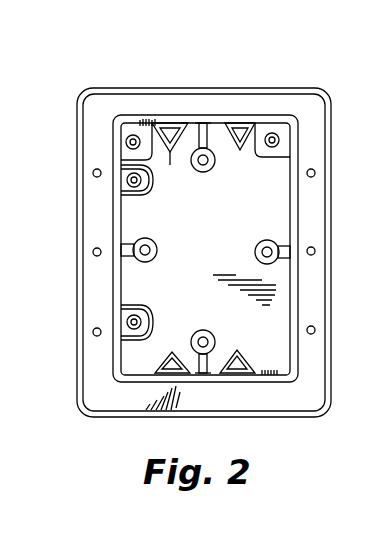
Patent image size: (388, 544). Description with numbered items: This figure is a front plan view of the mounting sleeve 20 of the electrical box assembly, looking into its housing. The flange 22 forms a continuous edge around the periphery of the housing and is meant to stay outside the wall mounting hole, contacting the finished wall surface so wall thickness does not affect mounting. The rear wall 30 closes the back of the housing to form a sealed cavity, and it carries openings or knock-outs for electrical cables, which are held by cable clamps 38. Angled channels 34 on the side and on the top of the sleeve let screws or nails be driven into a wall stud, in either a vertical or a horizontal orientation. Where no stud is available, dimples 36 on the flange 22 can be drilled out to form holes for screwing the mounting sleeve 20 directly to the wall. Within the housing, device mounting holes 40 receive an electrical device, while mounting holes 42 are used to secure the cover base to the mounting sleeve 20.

The mounting sleeve 20 is at (70, 108).
The flange 22 is at (324, 84).
The rear wall 30 is at (216, 261).
The angled channels 34 is at (133, 140).
The dimples 36 is at (93, 174).
The cable clamps 38 is at (237, 352).
The device mounting holes 40 is at (203, 172).
The mounting holes 42 is at (150, 258).